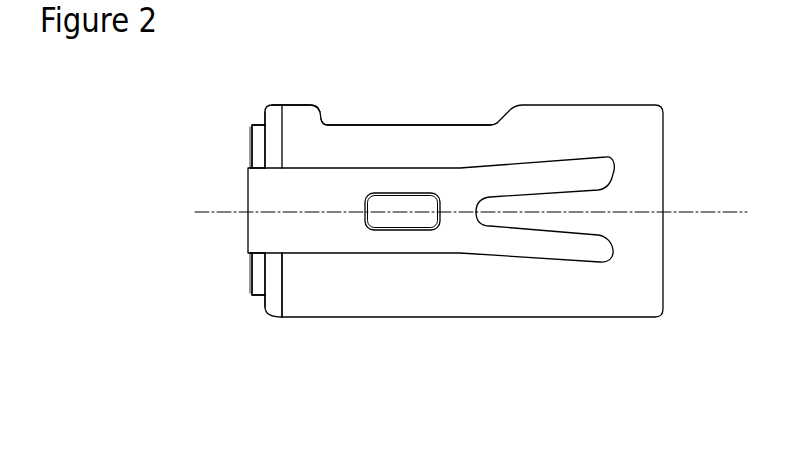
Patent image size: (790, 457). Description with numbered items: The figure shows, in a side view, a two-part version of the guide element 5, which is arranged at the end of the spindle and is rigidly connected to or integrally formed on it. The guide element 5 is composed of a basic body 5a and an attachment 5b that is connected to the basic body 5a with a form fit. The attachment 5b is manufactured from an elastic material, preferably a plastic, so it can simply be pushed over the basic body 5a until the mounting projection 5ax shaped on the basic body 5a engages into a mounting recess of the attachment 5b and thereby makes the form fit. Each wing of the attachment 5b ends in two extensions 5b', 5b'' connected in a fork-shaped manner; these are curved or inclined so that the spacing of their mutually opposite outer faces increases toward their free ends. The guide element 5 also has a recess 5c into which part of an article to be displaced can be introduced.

The guide element 5 is at (402, 370).
The basic body 5a is at (302, 118).
The mounting projection 5ax is at (390, 202).
The attachment 5b is at (284, 311).
The extension 5b' is at (431, 306).
The extension 5b'' is at (432, 119).
The recess 5c is at (459, 116).